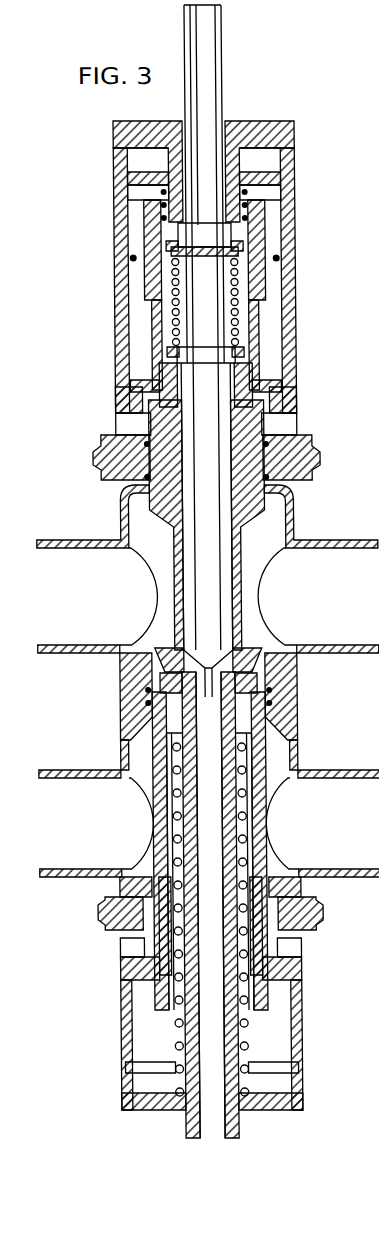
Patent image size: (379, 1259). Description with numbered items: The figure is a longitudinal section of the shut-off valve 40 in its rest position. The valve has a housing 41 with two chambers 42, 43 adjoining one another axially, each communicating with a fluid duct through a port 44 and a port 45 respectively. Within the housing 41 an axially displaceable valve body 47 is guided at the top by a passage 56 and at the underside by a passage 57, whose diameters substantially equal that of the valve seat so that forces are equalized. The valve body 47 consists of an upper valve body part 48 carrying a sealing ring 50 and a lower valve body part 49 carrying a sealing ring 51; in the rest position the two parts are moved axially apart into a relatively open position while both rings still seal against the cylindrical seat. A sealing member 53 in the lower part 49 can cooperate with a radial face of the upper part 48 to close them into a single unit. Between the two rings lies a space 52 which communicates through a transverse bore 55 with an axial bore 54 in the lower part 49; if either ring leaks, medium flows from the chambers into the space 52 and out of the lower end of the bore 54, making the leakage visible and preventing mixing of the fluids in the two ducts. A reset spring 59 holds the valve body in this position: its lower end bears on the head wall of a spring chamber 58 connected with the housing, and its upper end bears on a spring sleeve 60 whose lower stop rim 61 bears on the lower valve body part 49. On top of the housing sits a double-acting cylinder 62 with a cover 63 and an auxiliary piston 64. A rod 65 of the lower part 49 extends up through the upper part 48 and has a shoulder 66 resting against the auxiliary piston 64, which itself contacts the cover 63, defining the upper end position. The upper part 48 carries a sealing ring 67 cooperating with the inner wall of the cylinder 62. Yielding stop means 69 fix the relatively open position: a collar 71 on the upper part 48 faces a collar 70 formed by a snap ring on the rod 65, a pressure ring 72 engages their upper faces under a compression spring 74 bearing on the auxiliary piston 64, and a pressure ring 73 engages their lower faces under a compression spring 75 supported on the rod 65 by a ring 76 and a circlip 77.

The shut-off valve 40 is at (73, 259).
The housing 41 is at (116, 512).
The chamber 42 is at (274, 521).
The chamber 43 is at (275, 748).
The port 44 is at (84, 620).
The port 45 is at (54, 790).
The valve body 47 is at (147, 356).
The upper valve body part 48 is at (118, 672).
The lower valve body part 49 is at (112, 750).
The sealing ring 50 is at (278, 660).
The sealing ring 51 is at (265, 708).
The space 52 is at (250, 683).
The sealing member 53 is at (266, 697).
The axial bore 54 is at (207, 1126).
The transverse bore 55 is at (198, 672).
The passage 56 is at (286, 441).
The passage 57 is at (114, 925).
The spring chamber 58 is at (286, 1015).
The reset spring 59 is at (240, 1033).
The spring sleeve 60 is at (252, 958).
The lower stop rim 61 is at (262, 992).
The cylinder 62 is at (290, 306).
The cover 63 is at (250, 134).
The auxiliary piston 64 is at (270, 171).
The rod 65 is at (213, 404).
The shoulder 66 is at (250, 204).
The sealing ring 67 is at (280, 261).
The yielding stop means 69 is at (262, 247).
The collar 70 is at (185, 238).
The collar 71 is at (130, 260).
The pressure ring 72 is at (165, 250).
The pressure ring 73 is at (150, 282).
The compression spring 74 is at (160, 196).
The compression spring 75 is at (155, 305).
The ring 76 is at (168, 363).
The circlip 77 is at (168, 369).